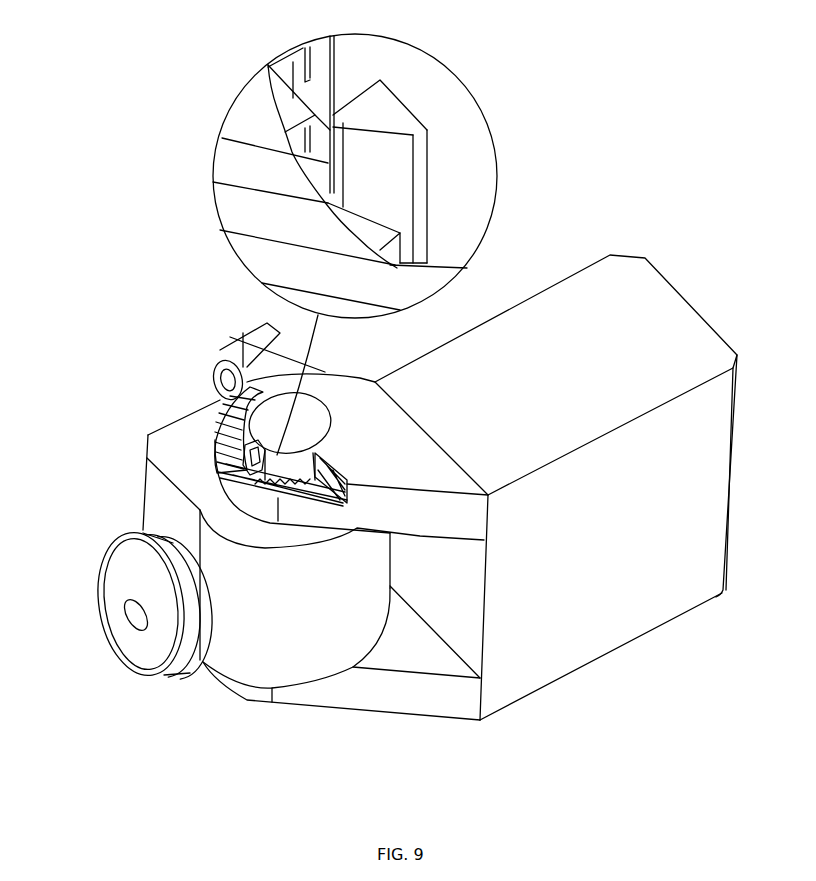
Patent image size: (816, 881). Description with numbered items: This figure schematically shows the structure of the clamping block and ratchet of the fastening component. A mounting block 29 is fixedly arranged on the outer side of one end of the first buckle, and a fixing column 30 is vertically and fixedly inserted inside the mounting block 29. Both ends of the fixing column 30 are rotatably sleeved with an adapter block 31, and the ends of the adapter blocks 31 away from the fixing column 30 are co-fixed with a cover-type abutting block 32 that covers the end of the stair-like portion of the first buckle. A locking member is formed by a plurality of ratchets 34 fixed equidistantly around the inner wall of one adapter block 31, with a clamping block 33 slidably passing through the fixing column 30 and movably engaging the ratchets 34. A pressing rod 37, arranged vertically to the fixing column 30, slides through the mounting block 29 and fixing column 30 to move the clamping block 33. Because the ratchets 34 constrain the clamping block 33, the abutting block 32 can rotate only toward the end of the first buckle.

The mounting block 29 is at (300, 641).
The fixing column 30 is at (440, 153).
The adapter block 31 is at (417, 653).
The abutting block 32 is at (648, 593).
The clamping block 33 is at (388, 110).
The ratchet 34 is at (300, 122).
The pressing rod 37 is at (122, 583).